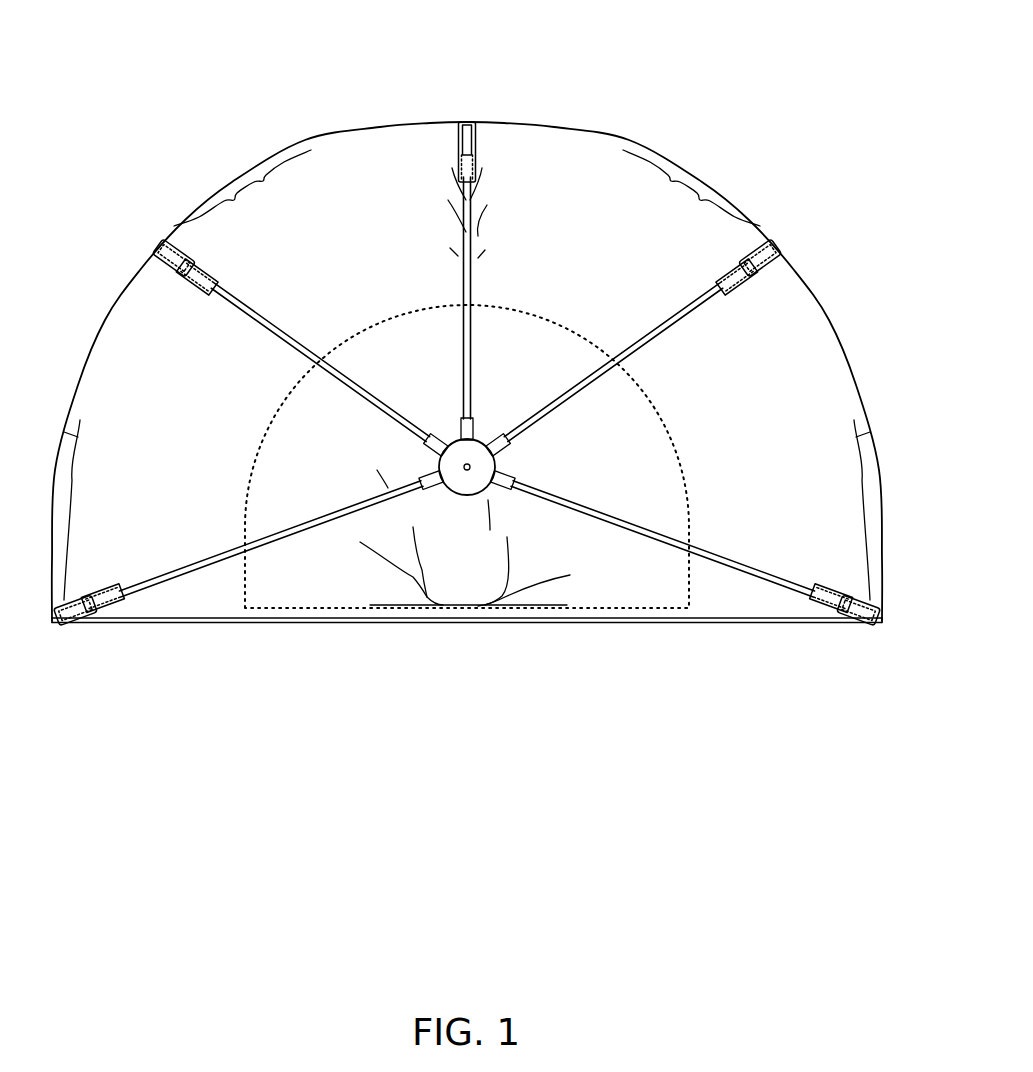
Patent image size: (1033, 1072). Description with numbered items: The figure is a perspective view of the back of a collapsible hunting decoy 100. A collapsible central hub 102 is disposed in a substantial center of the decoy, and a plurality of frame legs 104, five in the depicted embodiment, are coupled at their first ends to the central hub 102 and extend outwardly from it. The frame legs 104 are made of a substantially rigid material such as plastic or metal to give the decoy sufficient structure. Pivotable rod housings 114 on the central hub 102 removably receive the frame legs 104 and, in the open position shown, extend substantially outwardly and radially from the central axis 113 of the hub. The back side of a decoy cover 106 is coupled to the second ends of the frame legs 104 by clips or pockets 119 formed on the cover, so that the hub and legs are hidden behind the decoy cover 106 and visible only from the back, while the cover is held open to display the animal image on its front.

The collapsible hunting decoy 100 is at (120, 68).
The collapsible central hub 102 is at (458, 483).
The frame legs 104 is at (658, 546).
The decoy cover 106 is at (576, 218).
The central axis 113 is at (468, 463).
The pivotable rod housings 114 is at (506, 472).
The pockets 119 is at (777, 246).